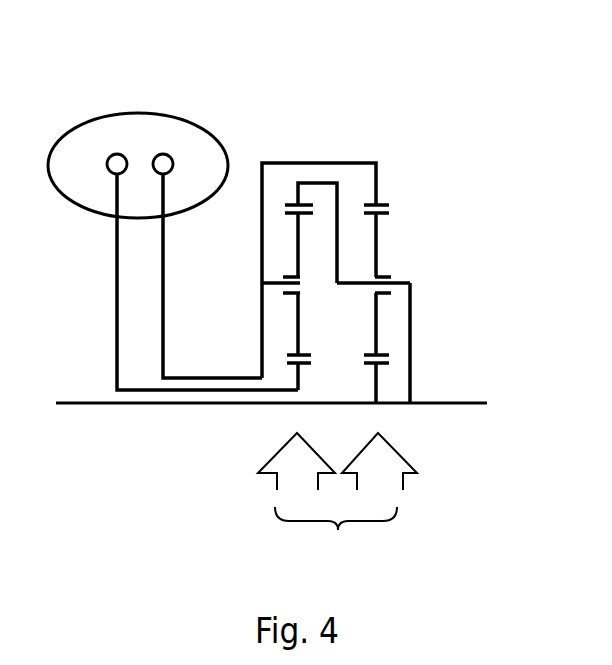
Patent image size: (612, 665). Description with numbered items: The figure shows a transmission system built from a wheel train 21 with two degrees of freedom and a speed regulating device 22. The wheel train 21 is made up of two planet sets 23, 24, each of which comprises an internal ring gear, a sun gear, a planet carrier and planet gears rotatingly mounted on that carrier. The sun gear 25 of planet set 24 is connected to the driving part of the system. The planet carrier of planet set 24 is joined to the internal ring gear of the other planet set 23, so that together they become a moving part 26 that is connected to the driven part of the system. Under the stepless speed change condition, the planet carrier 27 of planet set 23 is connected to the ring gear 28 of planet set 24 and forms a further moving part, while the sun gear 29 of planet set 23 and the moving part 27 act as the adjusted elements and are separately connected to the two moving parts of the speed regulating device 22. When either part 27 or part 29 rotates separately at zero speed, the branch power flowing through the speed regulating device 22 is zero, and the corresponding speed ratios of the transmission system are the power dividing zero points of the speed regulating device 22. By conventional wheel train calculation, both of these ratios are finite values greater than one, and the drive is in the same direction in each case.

The wheel train 21 is at (336, 542).
The speed regulating device 22 is at (138, 130).
The planet set 23 is at (296, 461).
The planet set 24 is at (379, 461).
The sun gear 25 is at (87, 403).
The moving part 26 is at (442, 403).
The planet carrier 27 is at (260, 267).
The ring gear 28 is at (377, 182).
The sun gear 29 is at (203, 390).